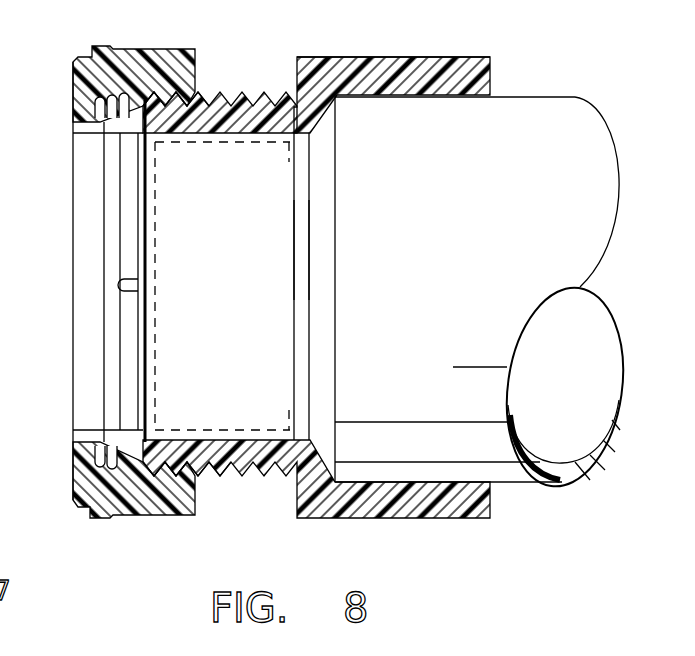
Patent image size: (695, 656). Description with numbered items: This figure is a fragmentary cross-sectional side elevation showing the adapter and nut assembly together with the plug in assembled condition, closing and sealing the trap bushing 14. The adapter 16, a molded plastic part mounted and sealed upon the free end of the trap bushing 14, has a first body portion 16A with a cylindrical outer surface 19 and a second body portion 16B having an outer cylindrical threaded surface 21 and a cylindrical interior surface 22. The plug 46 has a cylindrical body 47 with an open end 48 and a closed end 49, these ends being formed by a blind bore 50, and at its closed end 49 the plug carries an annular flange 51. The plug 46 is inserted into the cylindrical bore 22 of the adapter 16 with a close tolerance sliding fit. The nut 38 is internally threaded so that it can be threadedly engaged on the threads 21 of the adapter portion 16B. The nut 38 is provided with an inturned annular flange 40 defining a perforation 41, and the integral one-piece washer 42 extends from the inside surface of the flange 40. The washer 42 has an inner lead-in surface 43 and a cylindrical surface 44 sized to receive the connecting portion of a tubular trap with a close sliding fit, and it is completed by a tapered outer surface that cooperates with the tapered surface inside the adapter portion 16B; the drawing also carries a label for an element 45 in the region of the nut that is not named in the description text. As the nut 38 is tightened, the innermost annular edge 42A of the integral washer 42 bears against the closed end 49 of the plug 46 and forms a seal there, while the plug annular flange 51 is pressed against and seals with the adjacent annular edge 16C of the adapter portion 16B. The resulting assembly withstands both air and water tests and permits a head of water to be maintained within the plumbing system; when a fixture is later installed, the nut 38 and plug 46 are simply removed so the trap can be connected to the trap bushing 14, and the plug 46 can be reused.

The trap bushing 14 is at (527, 110).
The adapter 16 is at (412, 518).
The first body portion 16A is at (392, 52).
The second body portion 16B is at (280, 103).
The annular edge 16C is at (203, 469).
The cylindrical outer surface 19 is at (307, 53).
The outer cylindrical threaded surface 21 is at (200, 84).
The cylindrical interior surface 22 is at (238, 428).
The nut 38 is at (135, 518).
The inturned annular flange 40 is at (85, 462).
The perforation 41 is at (92, 310).
The integral one-piece washer 42 is at (108, 192).
The innermost annular edge 42A is at (140, 413).
The inner lead-in surface 43 is at (112, 257).
The cylindrical surface 44 is at (132, 145).
The seal ring 45 is at (138, 85).
The plug 46 is at (232, 332).
The cylindrical body 47 is at (174, 134).
The open end 48 is at (294, 262).
The closed end 49 is at (140, 367).
The blind bore 50 is at (288, 143).
The annular flange 51 is at (150, 243).